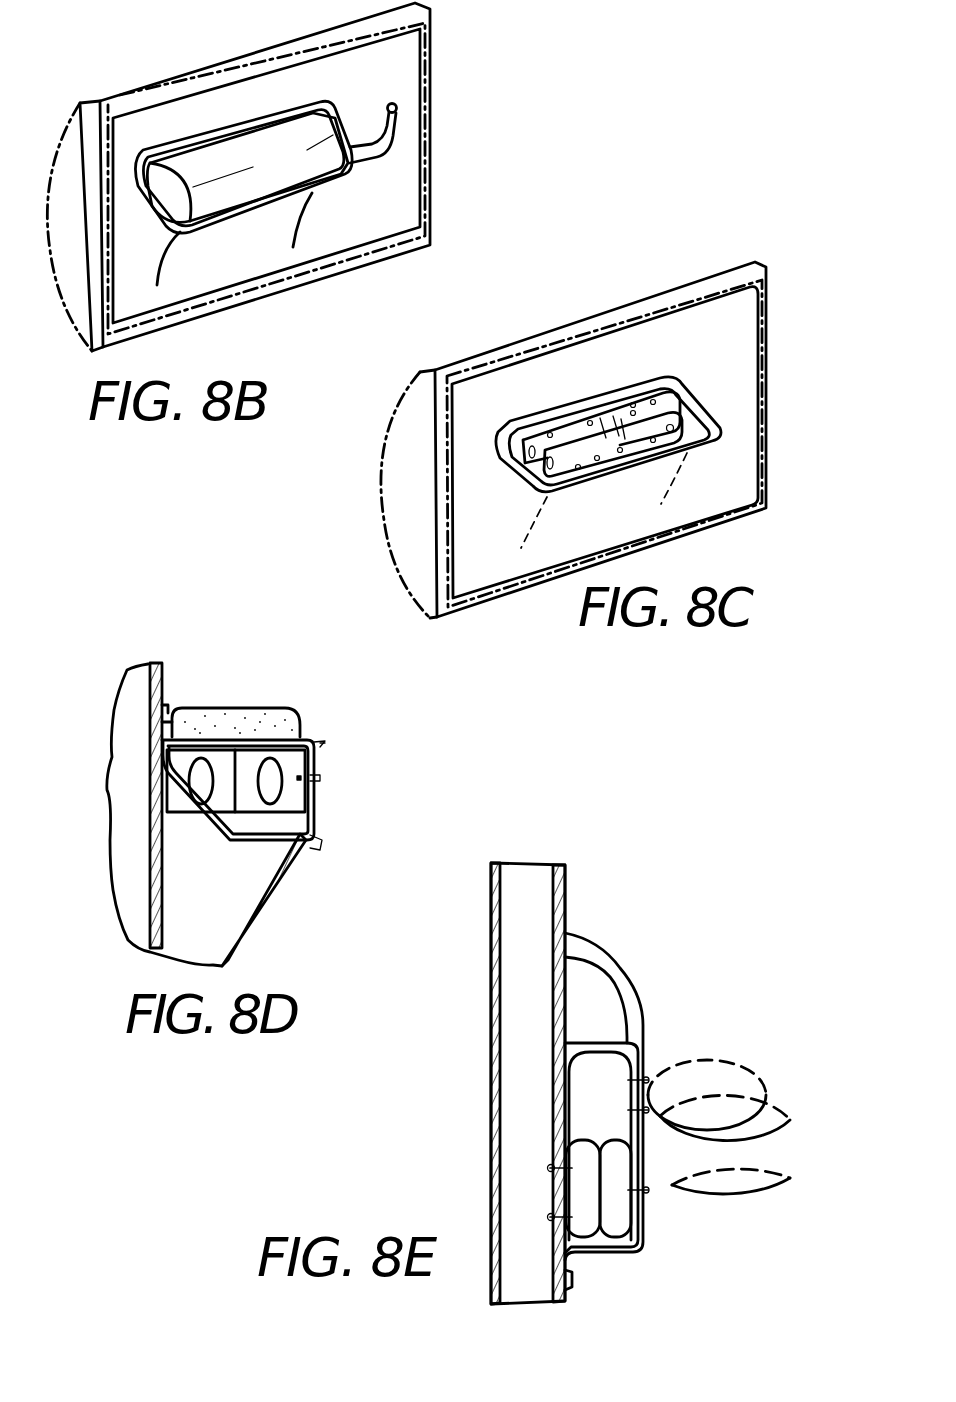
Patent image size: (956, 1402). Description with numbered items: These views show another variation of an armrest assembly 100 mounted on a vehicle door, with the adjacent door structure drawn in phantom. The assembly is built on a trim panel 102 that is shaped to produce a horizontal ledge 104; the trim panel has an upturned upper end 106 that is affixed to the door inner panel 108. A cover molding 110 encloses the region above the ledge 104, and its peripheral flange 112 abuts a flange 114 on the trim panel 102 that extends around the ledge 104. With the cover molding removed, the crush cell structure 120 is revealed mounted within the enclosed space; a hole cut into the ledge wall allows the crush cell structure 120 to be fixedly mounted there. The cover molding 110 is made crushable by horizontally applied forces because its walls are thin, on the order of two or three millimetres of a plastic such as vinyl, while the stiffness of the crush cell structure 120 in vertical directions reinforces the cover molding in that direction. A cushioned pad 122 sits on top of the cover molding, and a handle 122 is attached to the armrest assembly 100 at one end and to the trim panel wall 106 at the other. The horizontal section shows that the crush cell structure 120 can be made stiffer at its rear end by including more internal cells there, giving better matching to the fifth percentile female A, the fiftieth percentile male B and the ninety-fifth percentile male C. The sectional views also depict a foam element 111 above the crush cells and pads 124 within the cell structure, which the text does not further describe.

In FIG. 8B, the armrest assembly 100 is at (257, 90).
In FIG. 8B, the trim panel 102 is at (266, 233).
In FIG. 8D, the trim panel 102 is at (270, 922).
In FIG. 8D, the horizontal ledge 104 is at (285, 831).
In FIG. 8D, the upturned upper end 106 is at (168, 712).
In FIG. 8D, the door inner panel 108 is at (143, 672).
In FIG. 8E, the door inner panel 108 is at (561, 882).
In FIG. 8B, the cover molding 110 is at (214, 198).
In FIG. 8D, the cover molding 110 is at (329, 743).
In FIG. 8D, the foam pad 111 is at (282, 713).
In FIG. 8D, the peripheral flange 112 is at (175, 716).
In FIG. 8C, the flange 114 is at (558, 408).
In FIG. 8C, the crush cell structure 120 is at (702, 421).
In FIG. 8D, the crush cell structure 120 is at (252, 812).
In FIG. 8E, the crush cell structure 120 is at (622, 1064).
In FIG. 8B, the handle 122 is at (403, 147).
In FIG. 8E, the handle 122 is at (595, 951).
In FIG. 8E, the cushion pad 124 is at (580, 1160).
In FIG. 8E, the 5th percentile female A is at (735, 1063).
In FIG. 8E, the 50th percentile male B is at (781, 1117).
In FIG. 8E, the 95th percentile male C is at (783, 1268).